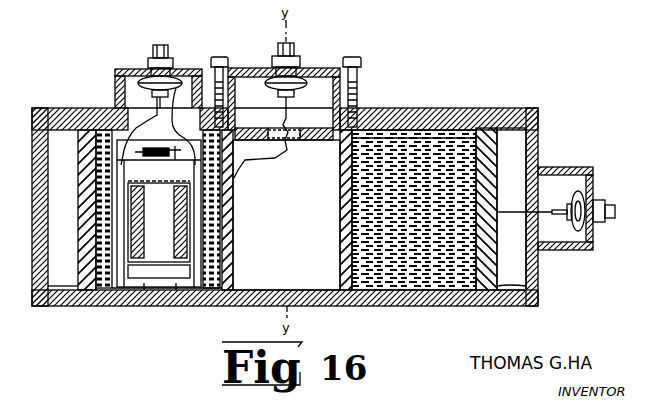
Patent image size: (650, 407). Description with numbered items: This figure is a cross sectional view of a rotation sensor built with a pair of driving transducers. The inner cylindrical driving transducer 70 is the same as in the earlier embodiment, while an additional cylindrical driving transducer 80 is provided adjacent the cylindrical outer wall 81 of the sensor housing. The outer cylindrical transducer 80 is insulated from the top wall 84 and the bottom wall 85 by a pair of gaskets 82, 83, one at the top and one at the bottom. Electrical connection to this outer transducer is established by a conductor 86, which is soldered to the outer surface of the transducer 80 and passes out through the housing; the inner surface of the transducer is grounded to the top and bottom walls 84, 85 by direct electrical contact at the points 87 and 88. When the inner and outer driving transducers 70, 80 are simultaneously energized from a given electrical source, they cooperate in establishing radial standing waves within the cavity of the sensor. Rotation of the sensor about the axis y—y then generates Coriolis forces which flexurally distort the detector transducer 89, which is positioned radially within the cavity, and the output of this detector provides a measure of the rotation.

The cylindrical driving transducer 70 is at (340, 228).
The additional cylindrical driving transducer 80 is at (497, 164).
The cylindrical outer wall 81 is at (538, 148).
The gasket 82 is at (493, 130).
The gasket 83 is at (497, 290).
The top wall 84 is at (437, 98).
The bottom wall 85 is at (406, 306).
The conductor 86 is at (516, 214).
The direct electrical contact 87 is at (476, 140).
The direct electrical contact 88 is at (478, 286).
The detector transducer 89 is at (170, 239).